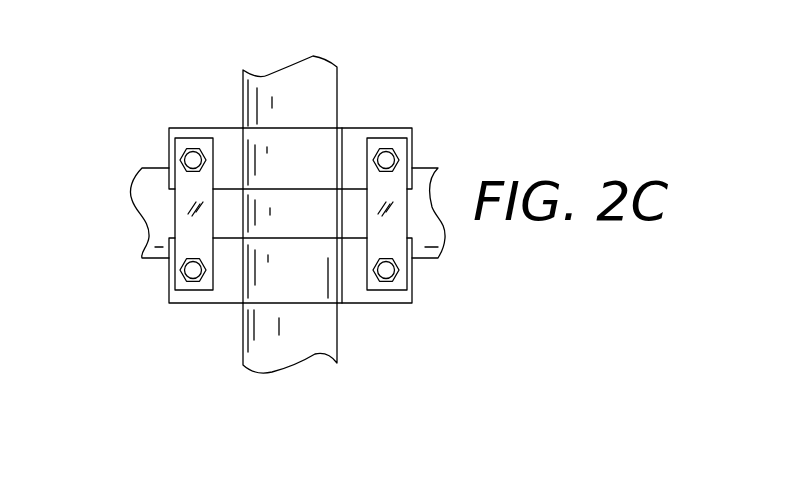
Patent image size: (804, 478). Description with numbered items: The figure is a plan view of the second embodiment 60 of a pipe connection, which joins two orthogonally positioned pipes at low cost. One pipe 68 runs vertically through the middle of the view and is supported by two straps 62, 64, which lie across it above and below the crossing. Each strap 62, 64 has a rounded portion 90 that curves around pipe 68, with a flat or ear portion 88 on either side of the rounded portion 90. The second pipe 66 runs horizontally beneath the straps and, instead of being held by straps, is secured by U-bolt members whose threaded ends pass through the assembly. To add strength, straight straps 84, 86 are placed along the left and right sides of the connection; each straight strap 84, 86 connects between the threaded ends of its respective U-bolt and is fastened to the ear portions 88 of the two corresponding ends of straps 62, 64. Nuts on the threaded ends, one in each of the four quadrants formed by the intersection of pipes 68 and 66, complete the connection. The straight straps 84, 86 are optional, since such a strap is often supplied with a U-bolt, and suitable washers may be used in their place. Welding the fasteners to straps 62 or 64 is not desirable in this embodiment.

The second embodiment of a pipe connection 60 is at (165, 95).
The strap 62 is at (360, 288).
The strap 64 is at (355, 150).
The pipe 66 is at (155, 218).
The pipe 68 is at (247, 93).
The straight strap 84 is at (383, 208).
The straight strap 86 is at (180, 240).
The flat or ear portion 88 is at (230, 140).
The rounded portion 90 is at (287, 275).